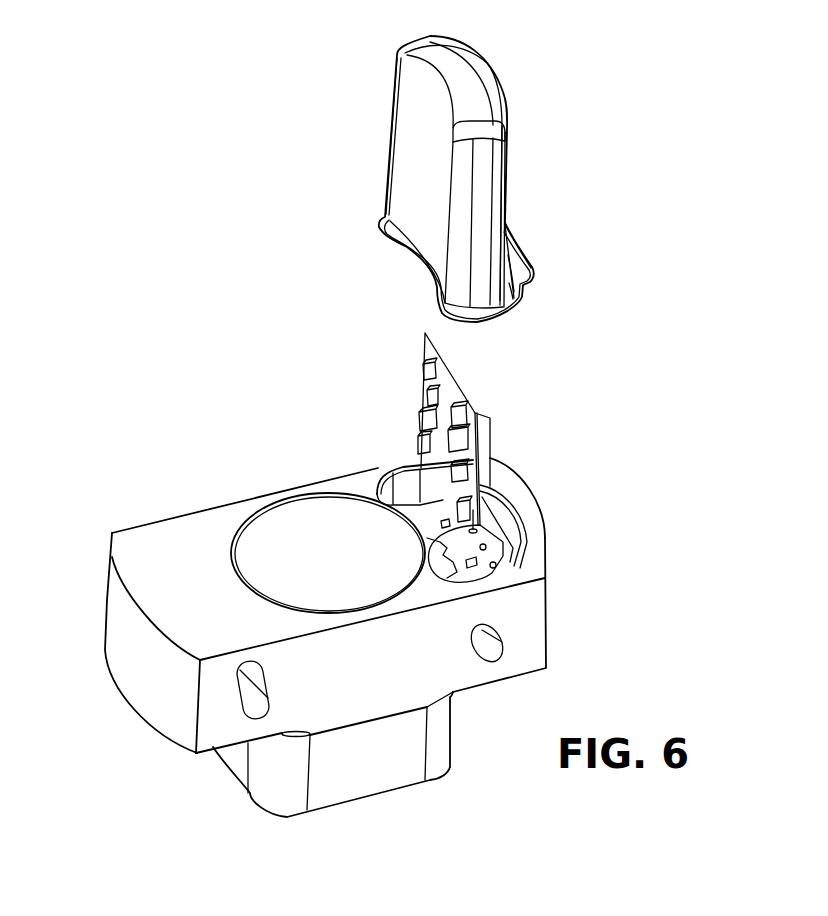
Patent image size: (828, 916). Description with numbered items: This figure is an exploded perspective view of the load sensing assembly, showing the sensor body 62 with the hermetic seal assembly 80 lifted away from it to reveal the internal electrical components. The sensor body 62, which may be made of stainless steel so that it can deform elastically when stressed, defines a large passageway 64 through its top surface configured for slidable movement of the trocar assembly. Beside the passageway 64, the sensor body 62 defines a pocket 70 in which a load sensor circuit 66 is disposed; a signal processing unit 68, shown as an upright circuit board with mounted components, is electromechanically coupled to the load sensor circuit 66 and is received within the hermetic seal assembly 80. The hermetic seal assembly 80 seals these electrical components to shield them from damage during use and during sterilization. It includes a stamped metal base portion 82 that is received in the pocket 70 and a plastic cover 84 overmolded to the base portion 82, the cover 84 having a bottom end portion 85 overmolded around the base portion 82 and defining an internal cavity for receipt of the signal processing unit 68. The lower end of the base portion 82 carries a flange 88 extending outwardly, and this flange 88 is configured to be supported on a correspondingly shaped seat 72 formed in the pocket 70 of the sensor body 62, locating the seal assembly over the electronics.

The sensor body 62 is at (135, 547).
The passageway 64 is at (277, 530).
The load sensor circuit 66 is at (487, 570).
The signal processing unit 68 is at (487, 437).
The pocket 70 is at (403, 483).
The seat 72 is at (380, 475).
The hermetic seal assembly 80 is at (513, 188).
The base portion 82 is at (505, 287).
The cover 84 is at (502, 155).
The bottom end portion 85 is at (413, 222).
The flange 88 is at (522, 253).